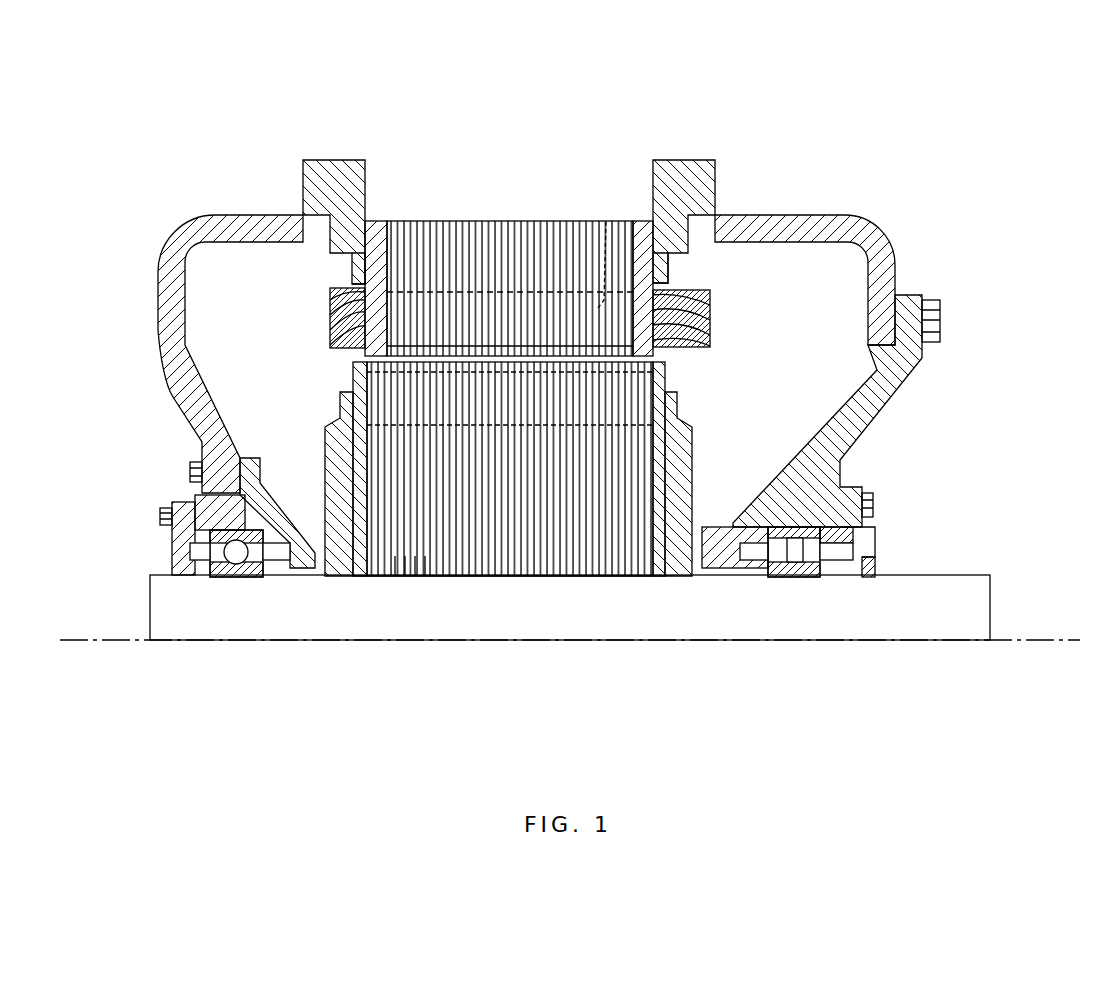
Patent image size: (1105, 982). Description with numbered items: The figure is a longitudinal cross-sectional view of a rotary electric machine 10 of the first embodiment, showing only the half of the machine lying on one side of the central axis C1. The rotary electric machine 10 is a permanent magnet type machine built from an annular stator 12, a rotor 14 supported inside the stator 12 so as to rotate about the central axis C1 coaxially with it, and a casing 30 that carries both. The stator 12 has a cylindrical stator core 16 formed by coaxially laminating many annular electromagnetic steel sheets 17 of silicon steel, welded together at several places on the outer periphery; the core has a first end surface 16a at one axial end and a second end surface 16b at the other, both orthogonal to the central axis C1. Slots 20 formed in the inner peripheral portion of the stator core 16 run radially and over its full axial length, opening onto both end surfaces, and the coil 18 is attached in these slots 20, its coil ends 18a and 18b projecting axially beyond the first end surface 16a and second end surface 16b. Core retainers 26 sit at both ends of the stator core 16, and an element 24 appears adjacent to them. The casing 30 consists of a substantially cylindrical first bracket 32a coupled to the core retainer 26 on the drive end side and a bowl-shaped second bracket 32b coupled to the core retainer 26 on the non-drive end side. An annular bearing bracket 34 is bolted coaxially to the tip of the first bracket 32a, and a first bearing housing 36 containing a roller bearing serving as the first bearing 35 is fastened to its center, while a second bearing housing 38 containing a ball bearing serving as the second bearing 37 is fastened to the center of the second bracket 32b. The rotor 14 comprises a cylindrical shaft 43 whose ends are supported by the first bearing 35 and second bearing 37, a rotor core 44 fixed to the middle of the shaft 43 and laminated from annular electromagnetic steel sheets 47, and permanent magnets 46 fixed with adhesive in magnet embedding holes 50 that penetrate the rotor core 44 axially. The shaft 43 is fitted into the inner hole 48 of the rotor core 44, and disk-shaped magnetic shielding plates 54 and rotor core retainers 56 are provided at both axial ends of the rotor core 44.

The rotary electric machine 10 is at (808, 145).
The stator 12 is at (425, 200).
The rotor 14 is at (467, 645).
The stator core 16 is at (487, 230).
The first end surface 16a is at (665, 245).
The second end surface 16b is at (372, 250).
The electromagnetic steel sheets 17 is at (580, 222).
The stator coil 18 is at (718, 285).
The coil end 18a is at (710, 338).
The coil end 18b is at (330, 310).
The slots 20 is at (606, 222).
The end plate 24 is at (375, 230).
The core retainers 26 is at (345, 175).
The casing 30 is at (193, 205).
The first bracket 32a is at (830, 224).
The second bracket 32b is at (172, 262).
The bearing bracket 34 is at (877, 403).
The first bearing 35 is at (805, 578).
The first bearing housing 36 is at (885, 518).
The second bearing 37 is at (222, 578).
The second bearing housing 38 is at (178, 490).
The shaft 43 is at (947, 628).
The rotor core 44 is at (566, 556).
The permanent magnets 46 is at (403, 390).
The electromagnetic steel sheets 47 is at (424, 556).
The inner hole 48 is at (542, 577).
The magnet embedding holes 50 is at (665, 383).
The magnetic shielding plates 54 is at (357, 442).
The rotor core retainers 56 is at (333, 480).
The central axis C1 is at (1032, 638).